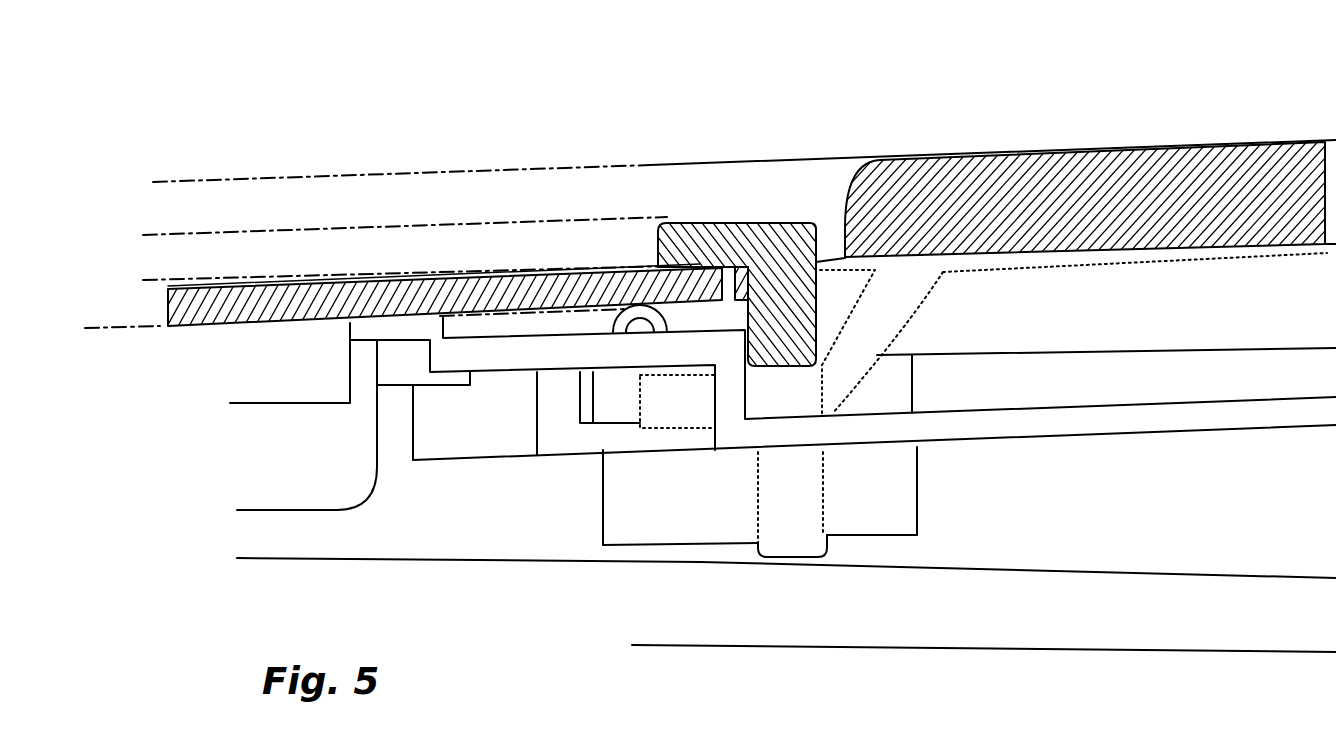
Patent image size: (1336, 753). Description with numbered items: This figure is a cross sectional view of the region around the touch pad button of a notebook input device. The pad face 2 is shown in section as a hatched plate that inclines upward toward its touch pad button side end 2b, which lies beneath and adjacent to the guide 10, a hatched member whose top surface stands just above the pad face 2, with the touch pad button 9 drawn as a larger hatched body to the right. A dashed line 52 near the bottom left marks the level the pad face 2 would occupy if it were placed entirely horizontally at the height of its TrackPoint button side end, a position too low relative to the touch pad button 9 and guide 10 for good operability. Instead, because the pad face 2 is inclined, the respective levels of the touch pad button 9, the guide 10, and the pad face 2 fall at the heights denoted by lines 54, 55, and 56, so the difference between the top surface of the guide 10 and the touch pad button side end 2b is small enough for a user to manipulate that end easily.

The pad face 2 is at (216, 288).
The touch pad button side end 2b is at (595, 264).
The touch pad button 9 is at (1010, 152).
The guide 10 is at (770, 222).
The dashed line 52 is at (122, 327).
The height of touch pad button 54 is at (472, 168).
The height of guide 55 is at (380, 228).
The height of pad face 56 is at (289, 278).